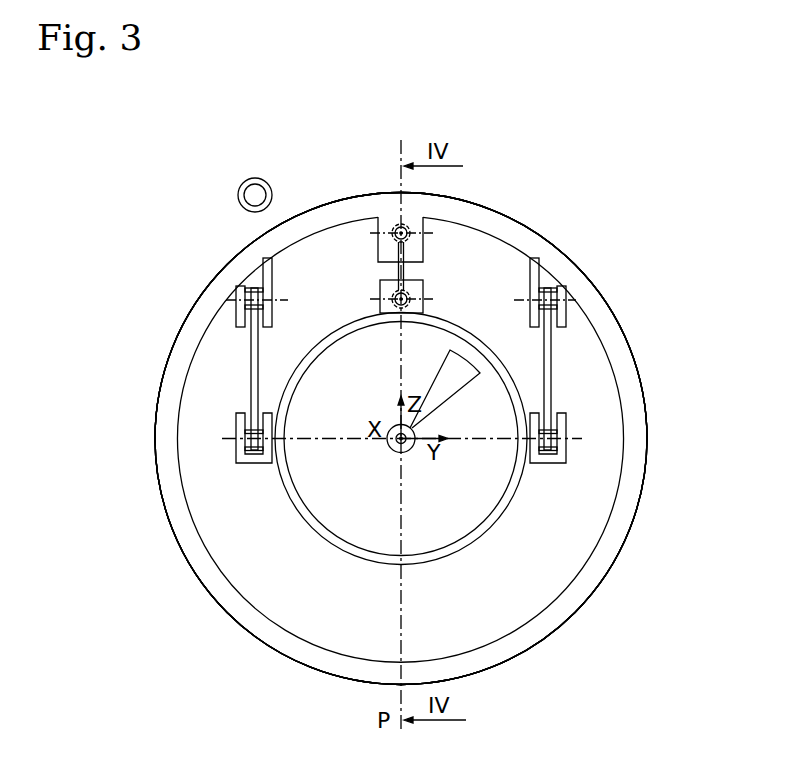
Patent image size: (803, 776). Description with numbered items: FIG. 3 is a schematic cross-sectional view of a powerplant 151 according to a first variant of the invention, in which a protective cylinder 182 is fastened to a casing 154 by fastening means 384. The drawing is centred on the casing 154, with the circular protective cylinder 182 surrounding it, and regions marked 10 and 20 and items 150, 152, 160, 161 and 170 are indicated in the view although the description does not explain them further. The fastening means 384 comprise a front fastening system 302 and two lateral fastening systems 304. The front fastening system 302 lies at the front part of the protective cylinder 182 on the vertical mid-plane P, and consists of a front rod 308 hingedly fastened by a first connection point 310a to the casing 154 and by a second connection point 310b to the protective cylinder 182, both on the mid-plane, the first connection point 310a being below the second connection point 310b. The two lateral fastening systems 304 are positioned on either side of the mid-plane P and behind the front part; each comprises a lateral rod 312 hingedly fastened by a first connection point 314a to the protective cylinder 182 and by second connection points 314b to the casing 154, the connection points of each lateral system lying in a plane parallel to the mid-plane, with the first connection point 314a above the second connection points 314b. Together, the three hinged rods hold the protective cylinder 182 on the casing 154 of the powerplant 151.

The electric machine 10 is at (458, 513).
The housing 20 is at (511, 630).
The stator assembly 150 is at (611, 628).
The powerplant 151 is at (111, 239).
The stator core 152 is at (655, 582).
The casing 154 is at (503, 512).
The rotor core 160 is at (323, 493).
The magnet segment 161 is at (442, 388).
The fastener 170 is at (250, 197).
The protective cylinder 182 is at (622, 520).
The front fastening system 302 is at (644, 159).
The lateral fastening system 304 is at (653, 334).
The front rod 308 is at (423, 220).
The first connection point 310a is at (405, 295).
The second connection point 310b is at (403, 258).
The lateral rod 312 is at (252, 378).
The first connection point 314a is at (243, 300).
The second connection point 314b is at (255, 438).
The fastening means 384 is at (649, 253).